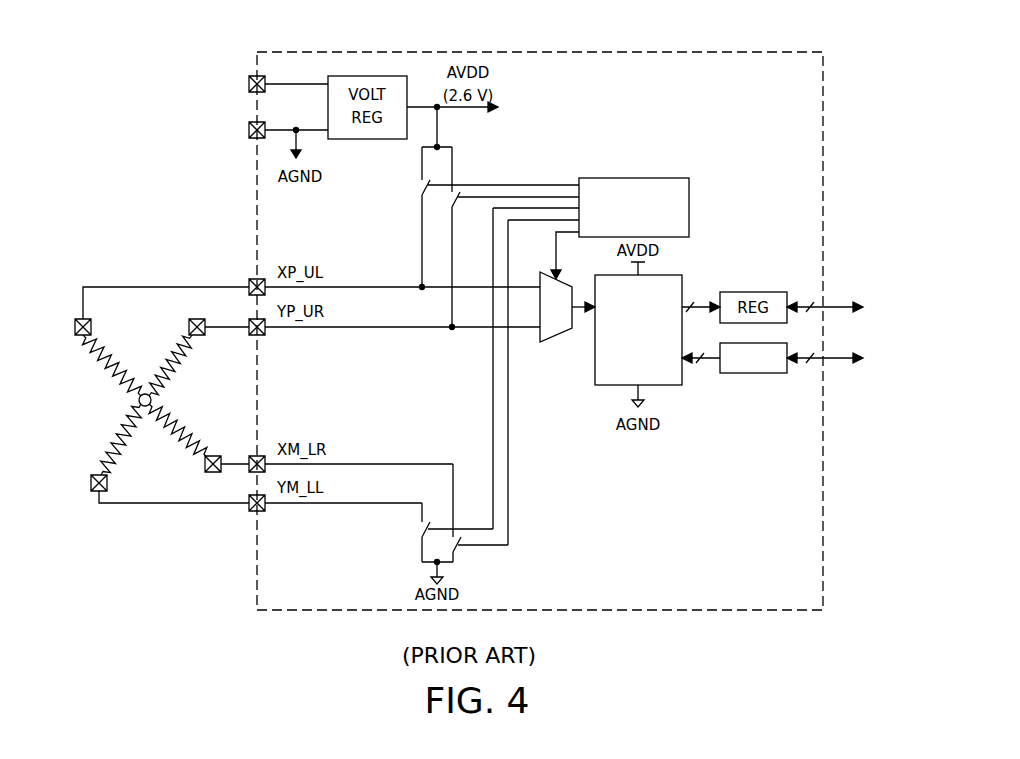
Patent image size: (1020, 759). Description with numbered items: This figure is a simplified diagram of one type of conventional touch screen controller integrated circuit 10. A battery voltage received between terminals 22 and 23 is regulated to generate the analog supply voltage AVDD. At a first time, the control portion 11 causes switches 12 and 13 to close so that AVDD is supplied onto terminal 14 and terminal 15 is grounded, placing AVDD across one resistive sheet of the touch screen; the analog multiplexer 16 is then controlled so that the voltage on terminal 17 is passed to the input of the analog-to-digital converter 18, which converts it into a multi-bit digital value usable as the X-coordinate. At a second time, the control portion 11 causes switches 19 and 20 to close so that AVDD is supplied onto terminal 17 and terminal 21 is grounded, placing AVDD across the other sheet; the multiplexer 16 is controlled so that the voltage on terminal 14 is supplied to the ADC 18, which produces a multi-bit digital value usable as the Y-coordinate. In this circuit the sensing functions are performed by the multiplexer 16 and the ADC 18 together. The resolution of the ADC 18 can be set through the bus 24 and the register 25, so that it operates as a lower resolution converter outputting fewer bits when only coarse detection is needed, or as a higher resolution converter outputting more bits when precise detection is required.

The touch screen controller integrated circuit 10 is at (775, 52).
The control portion 11 is at (637, 178).
The switch 12 is at (418, 186).
The switch 13 is at (458, 547).
The terminal 14 is at (247, 291).
The terminal 15 is at (247, 468).
The analog multiplexer 16 is at (556, 307).
The terminal 17 is at (247, 330).
The analog-to-digital converter 18 is at (638, 330).
The switch 19 is at (459, 201).
The switch 20 is at (418, 530).
The terminal 21 is at (247, 506).
The terminal 22 is at (247, 87).
The terminal 23 is at (247, 134).
The bus 24 is at (830, 358).
The register 25 is at (752, 373).